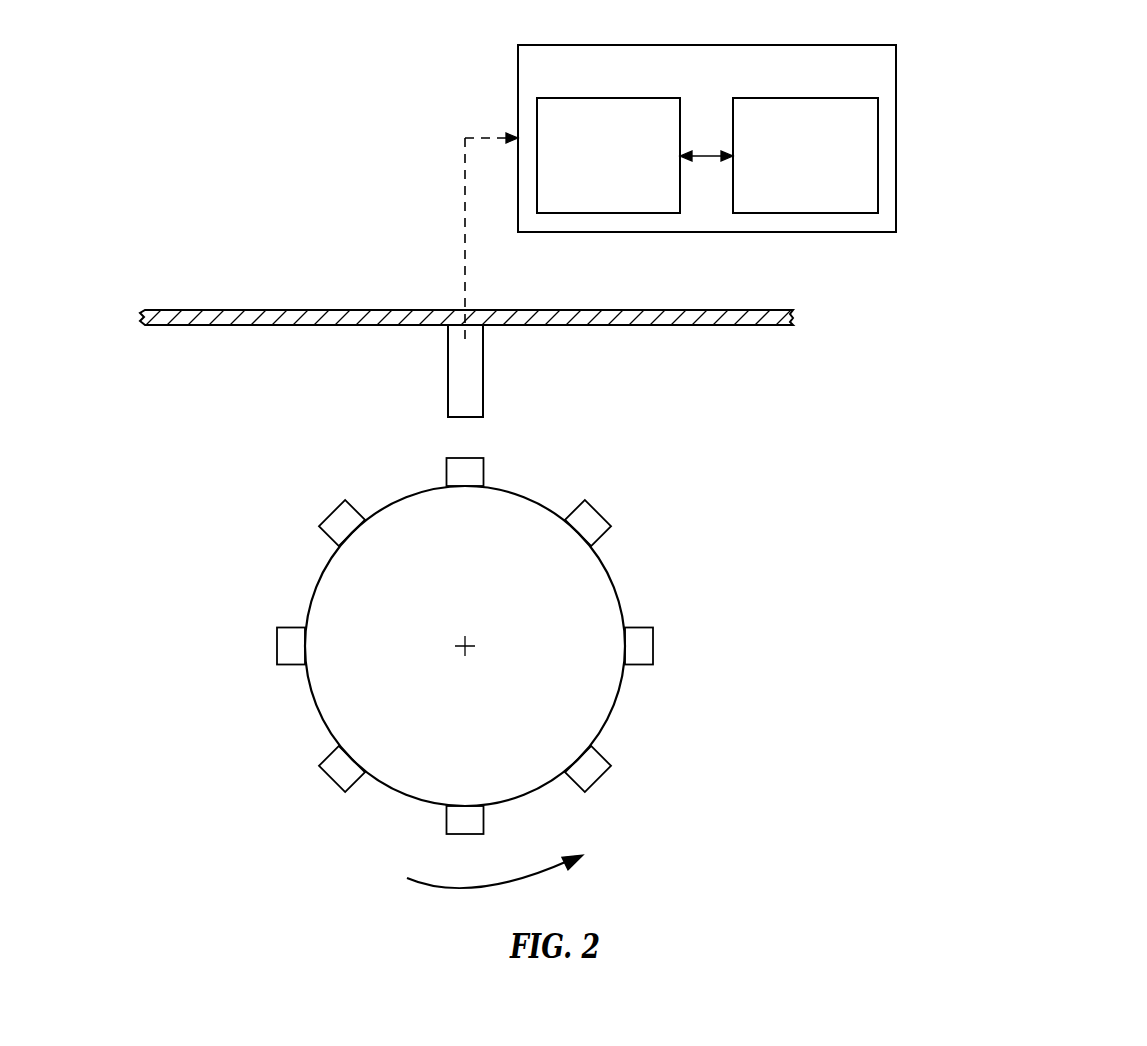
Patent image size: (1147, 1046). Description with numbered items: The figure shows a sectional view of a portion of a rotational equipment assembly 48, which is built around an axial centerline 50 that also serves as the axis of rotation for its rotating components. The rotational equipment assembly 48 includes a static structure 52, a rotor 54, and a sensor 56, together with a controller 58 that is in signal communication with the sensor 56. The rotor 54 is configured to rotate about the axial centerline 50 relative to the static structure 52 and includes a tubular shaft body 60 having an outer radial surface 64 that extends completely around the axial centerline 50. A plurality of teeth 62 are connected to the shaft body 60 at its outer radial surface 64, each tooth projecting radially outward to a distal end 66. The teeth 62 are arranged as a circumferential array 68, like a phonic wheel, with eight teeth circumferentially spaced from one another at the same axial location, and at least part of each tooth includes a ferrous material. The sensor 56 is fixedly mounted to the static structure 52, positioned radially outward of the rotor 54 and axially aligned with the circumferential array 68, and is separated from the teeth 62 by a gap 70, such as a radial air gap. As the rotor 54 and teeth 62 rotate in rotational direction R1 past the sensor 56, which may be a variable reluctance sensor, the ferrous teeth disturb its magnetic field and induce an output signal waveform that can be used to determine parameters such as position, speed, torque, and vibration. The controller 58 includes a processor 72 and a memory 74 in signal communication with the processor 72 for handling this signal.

The rotational equipment assembly 48 is at (1068, 134).
The axial centerline 50 is at (475, 650).
The static structure 52 is at (737, 318).
The rotor 54 is at (660, 558).
The sensor 56 is at (458, 355).
The controller 58 is at (896, 70).
The shaft body 60 is at (602, 702).
The teeth 62 is at (473, 475).
The outer radial surface 64 is at (320, 582).
The distal end 66 is at (457, 457).
The circumferential array 68 is at (250, 698).
The gap 70 is at (480, 436).
The processor 72 is at (622, 172).
The memory 74 is at (820, 172).
The rotational direction R1 is at (440, 886).